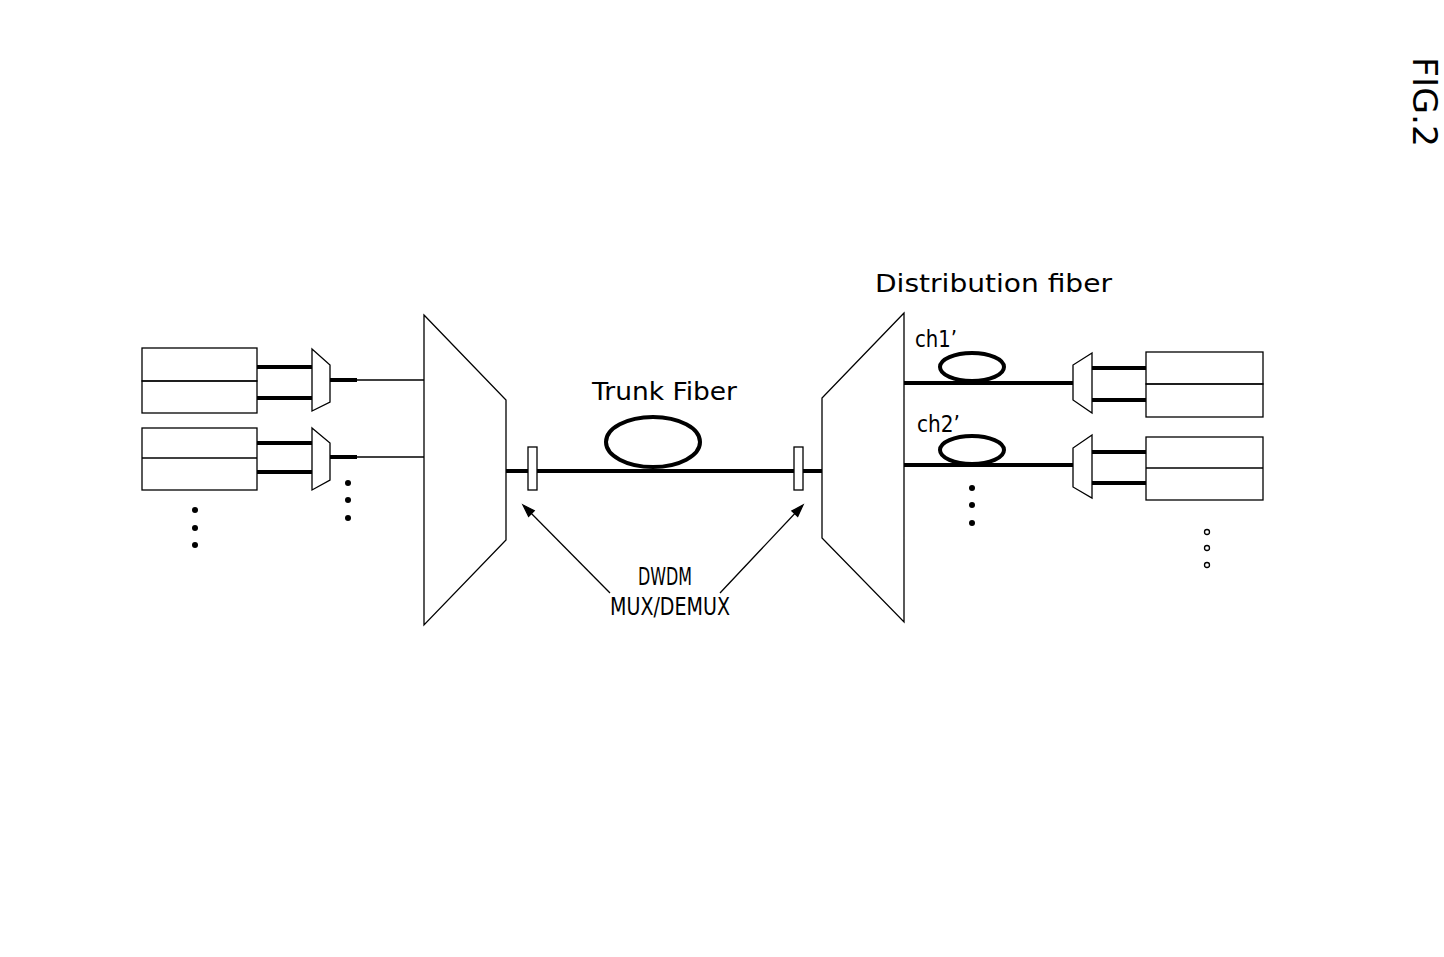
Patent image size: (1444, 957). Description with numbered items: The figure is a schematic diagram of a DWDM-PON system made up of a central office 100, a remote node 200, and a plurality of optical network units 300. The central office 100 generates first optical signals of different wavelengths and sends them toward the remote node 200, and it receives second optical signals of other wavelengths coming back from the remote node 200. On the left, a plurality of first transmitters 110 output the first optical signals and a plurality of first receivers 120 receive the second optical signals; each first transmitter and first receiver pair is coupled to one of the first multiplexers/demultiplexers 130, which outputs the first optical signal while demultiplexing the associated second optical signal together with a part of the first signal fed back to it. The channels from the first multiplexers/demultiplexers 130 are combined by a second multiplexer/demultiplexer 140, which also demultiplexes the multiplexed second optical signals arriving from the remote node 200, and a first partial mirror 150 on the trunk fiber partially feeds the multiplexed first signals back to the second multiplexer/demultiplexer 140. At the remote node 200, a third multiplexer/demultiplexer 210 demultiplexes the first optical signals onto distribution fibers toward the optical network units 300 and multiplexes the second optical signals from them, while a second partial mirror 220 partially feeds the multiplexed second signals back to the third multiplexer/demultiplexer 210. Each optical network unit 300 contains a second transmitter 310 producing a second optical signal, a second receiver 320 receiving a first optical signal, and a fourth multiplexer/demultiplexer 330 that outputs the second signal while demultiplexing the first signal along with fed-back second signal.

The central office 100 is at (387, 600).
The first transmitters 110 is at (142, 367).
The first receivers 120 is at (142, 395).
The first multiplexers/demultiplexers 130 is at (311, 353).
The second multiplexer/demultiplexer 140 is at (468, 357).
The first partial mirror 150 is at (533, 447).
The remote node 200 is at (882, 628).
The third multiplexer/demultiplexer 210 is at (863, 357).
The second partial mirror 220 is at (797, 447).
The optical network units 300 is at (1185, 615).
The second transmitters 310 is at (1264, 370).
The second receivers 320 is at (1264, 397).
The fourth multiplexers/demultiplexers 330 is at (1095, 358).